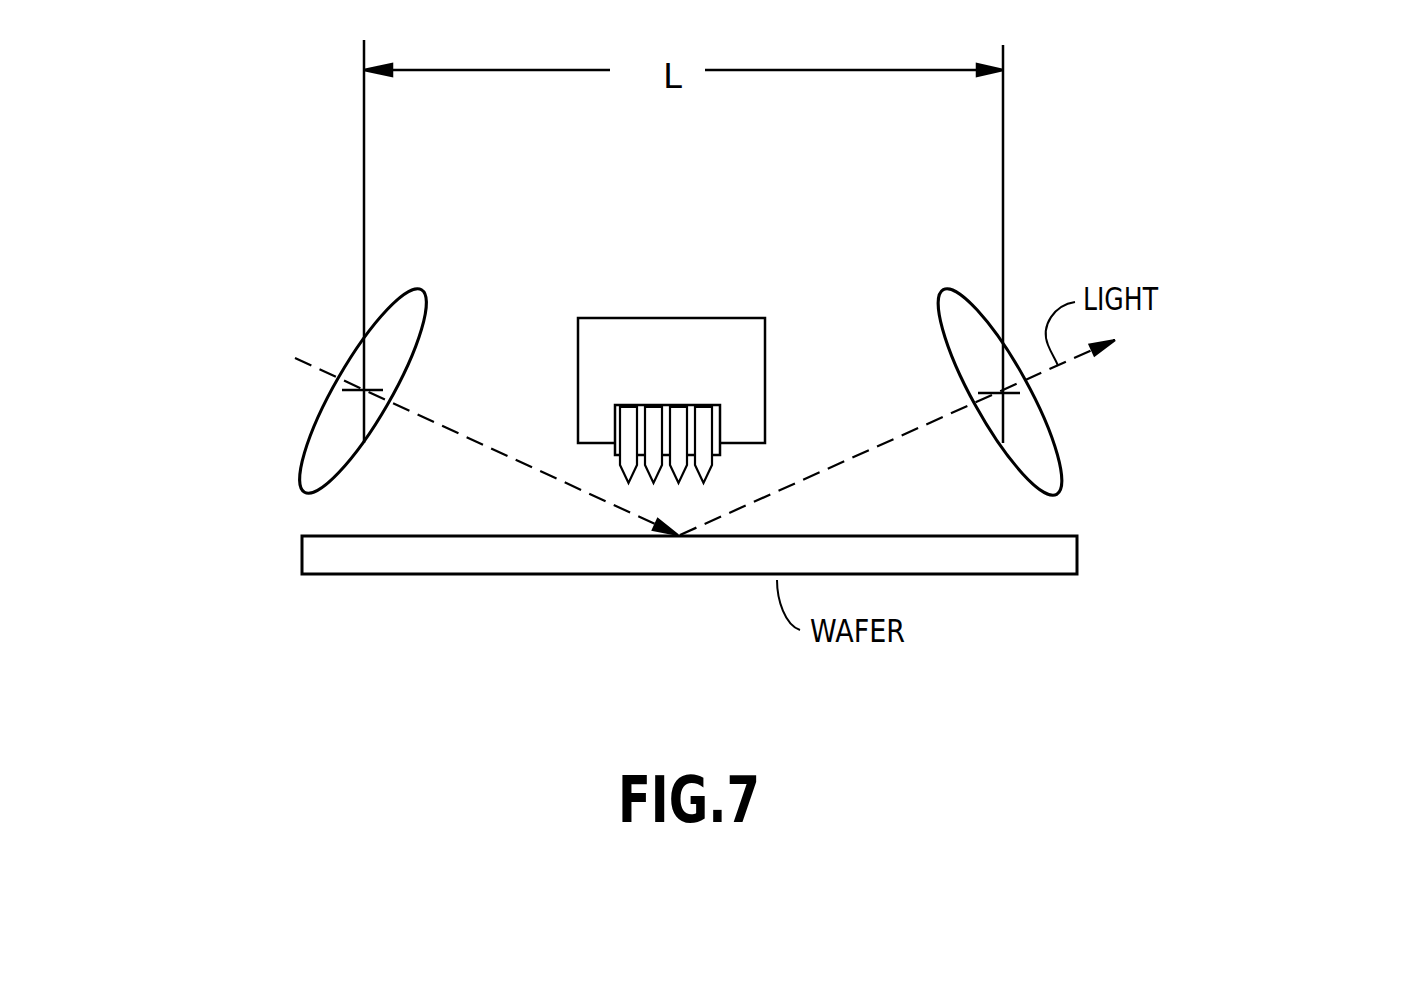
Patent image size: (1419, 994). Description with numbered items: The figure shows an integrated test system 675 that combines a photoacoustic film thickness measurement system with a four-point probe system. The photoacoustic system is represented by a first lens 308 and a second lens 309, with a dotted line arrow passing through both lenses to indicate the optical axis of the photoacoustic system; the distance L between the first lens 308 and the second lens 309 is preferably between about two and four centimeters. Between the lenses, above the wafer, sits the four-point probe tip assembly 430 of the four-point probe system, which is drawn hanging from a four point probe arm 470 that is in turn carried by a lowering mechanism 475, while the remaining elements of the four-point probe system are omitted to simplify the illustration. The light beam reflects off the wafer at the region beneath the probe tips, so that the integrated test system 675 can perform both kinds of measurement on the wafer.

The first lens 308 is at (347, 353).
The second lens 309 is at (1058, 443).
The lowering mechanism 475 is at (765, 200).
The four point probe arm 470 is at (670, 410).
The four-point probe tip assembly 430 is at (617, 472).
The integrated test system 675 is at (1238, 633).